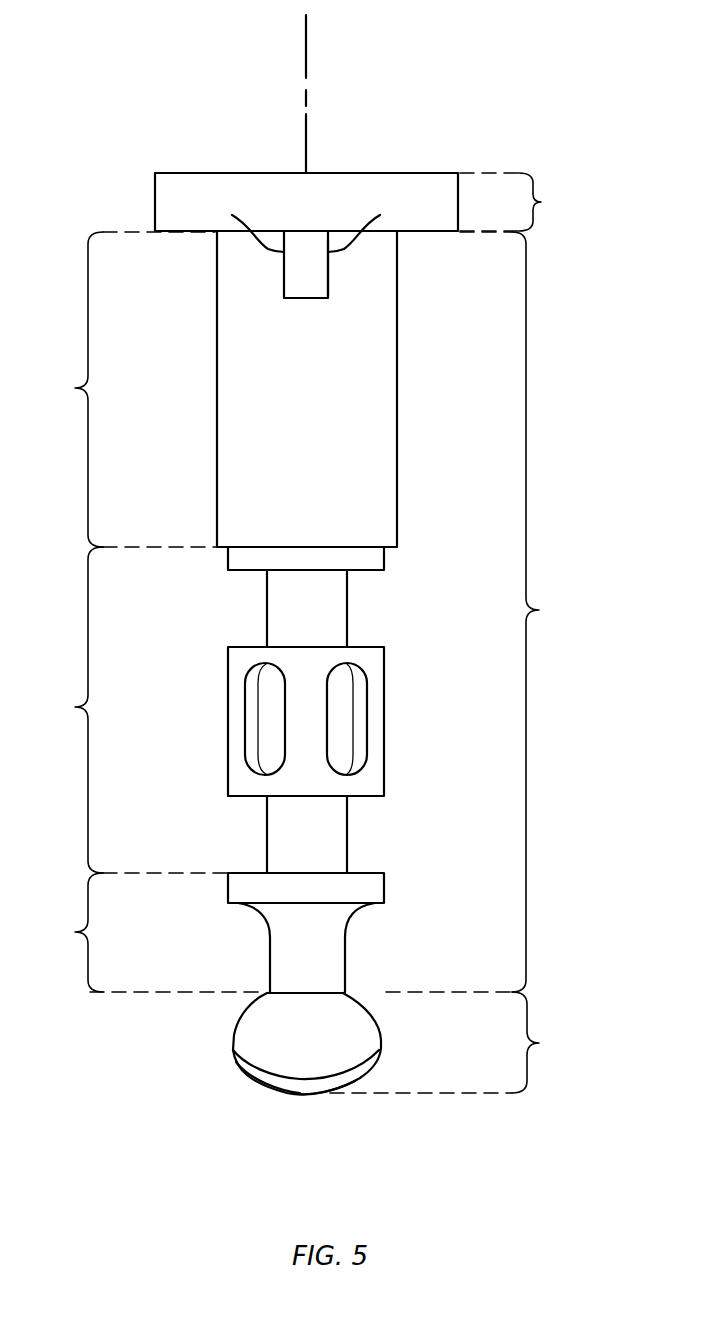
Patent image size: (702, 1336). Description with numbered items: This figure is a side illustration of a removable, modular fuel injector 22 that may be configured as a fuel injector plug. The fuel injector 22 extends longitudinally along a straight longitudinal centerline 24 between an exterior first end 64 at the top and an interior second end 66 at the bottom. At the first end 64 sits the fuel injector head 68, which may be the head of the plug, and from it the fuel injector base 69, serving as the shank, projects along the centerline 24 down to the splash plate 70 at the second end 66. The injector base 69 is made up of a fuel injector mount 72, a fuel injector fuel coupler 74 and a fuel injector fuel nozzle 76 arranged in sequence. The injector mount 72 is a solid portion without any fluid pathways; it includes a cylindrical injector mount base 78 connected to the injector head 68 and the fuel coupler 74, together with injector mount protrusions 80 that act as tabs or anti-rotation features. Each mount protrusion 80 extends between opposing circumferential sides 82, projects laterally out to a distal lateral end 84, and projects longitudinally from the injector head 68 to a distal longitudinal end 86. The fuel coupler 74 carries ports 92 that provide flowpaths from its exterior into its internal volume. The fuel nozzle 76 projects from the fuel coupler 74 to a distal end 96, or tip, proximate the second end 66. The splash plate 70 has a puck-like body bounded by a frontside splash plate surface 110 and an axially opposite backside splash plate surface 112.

The fuel injector 22 is at (470, 82).
The longitudinal centerline 24 is at (306, 28).
The first end 64 is at (412, 173).
The second end 66 is at (307, 1095).
The fuel injector head 68 is at (518, 202).
The fuel injector base 69 is at (517, 612).
The splash plate 70 is at (452, 1042).
The fuel injector mount 72 is at (128, 389).
The fuel injector fuel coupler 74 is at (212, 710).
The fuel injector fuel nozzle 76 is at (276, 933).
The injector mount base 78 is at (400, 387).
The injector mount protrusion 80 is at (282, 284).
The circumferential side 82 is at (306, 222).
The distal lateral end 84 is at (318, 282).
The distal longitudinal end 86 is at (307, 300).
The port 92 is at (263, 732).
The distal end 96 is at (320, 993).
The frontside splash plate surface 110 is at (253, 1037).
The backside splash plate surface 112 is at (265, 1087).